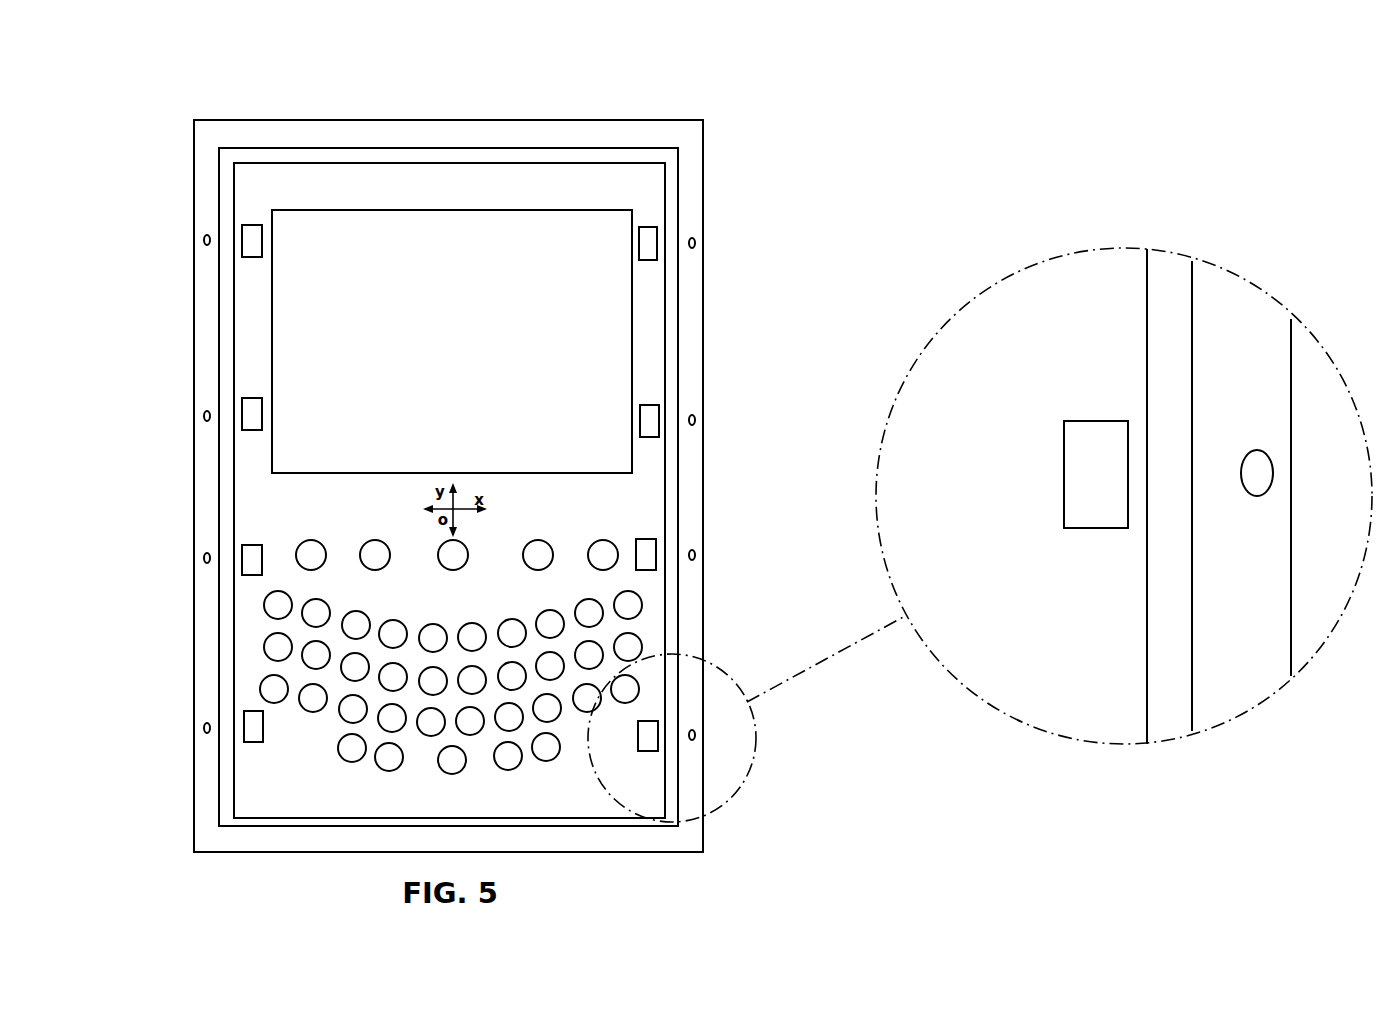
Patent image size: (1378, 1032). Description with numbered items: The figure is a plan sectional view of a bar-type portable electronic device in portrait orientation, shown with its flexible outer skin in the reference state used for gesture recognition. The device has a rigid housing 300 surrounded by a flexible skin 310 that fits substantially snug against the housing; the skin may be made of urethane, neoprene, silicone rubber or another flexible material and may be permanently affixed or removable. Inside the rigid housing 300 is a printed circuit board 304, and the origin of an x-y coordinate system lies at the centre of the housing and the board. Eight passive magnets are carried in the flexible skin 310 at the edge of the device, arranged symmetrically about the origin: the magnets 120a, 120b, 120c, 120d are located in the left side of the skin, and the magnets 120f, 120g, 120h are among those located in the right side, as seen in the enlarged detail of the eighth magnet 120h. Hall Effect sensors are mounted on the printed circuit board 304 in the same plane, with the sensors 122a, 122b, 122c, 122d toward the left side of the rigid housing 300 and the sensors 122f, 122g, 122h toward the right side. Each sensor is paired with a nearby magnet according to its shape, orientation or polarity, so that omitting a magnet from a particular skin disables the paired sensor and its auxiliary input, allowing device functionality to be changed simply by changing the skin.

The flexible skin 310 is at (473, 120).
The rigid housing 300 is at (383, 157).
The printed circuit board 304 is at (272, 501).
The first Hall Effect sensor 122a is at (255, 233).
The second Hall Effect sensor 122b is at (250, 405).
The third Hall Effect sensor 122c is at (243, 552).
The fourth Hall Effect sensor 122d is at (250, 720).
The sixth Hall Effect sensor 122f is at (650, 412).
The seventh Hall Effect sensor 122g is at (645, 553).
The eighth Hall Effect sensor 122h is at (1075, 465).
The first magnet 120a is at (205, 240).
The second magnet 120b is at (205, 416).
The third magnet 120c is at (207, 558).
The fourth magnet 120d is at (205, 728).
The sixth magnet 120f is at (697, 420).
The seventh magnet 120g is at (697, 555).
The eighth magnet 120h is at (1256, 467).